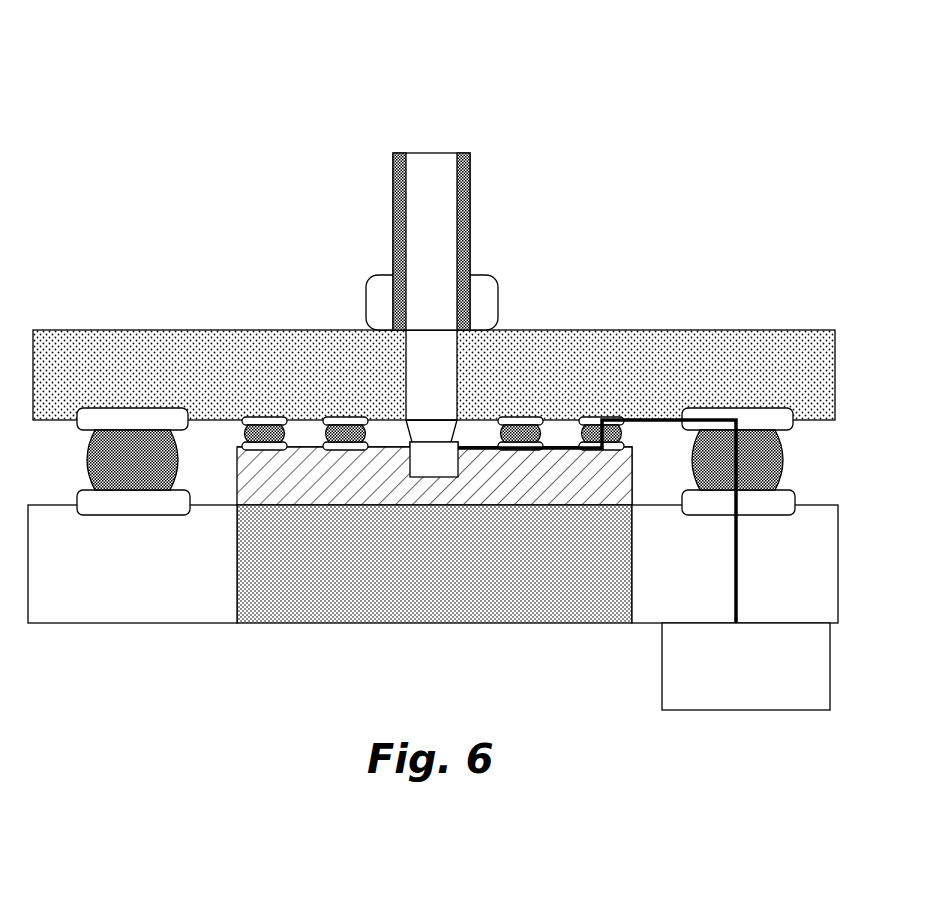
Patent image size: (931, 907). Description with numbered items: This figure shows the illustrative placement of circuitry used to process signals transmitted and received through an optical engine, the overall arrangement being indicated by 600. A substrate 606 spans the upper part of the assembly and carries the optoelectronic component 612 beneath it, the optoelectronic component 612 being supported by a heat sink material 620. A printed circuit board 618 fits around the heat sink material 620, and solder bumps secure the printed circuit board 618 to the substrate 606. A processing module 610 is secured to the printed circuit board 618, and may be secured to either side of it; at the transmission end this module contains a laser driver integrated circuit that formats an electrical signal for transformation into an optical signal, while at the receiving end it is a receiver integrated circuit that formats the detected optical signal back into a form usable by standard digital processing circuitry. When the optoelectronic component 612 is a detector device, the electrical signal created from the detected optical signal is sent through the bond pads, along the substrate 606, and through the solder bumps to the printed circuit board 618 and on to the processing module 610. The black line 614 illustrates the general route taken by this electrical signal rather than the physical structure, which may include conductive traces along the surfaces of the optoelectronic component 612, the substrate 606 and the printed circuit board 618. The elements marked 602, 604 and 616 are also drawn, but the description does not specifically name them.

The optical assembly 600 is at (210, 113).
The optical fiber 602 is at (432, 241).
The fiber channel / opening 604 is at (431, 386).
The substrate 606 is at (434, 375).
The processing module 610 is at (746, 666).
The optoelectronic component 612 is at (434, 473).
The black line 614 is at (738, 575).
The optical coupler 616 is at (434, 459).
The printed circuit board 618 is at (433, 564).
The heat sink material 620 is at (434, 564).